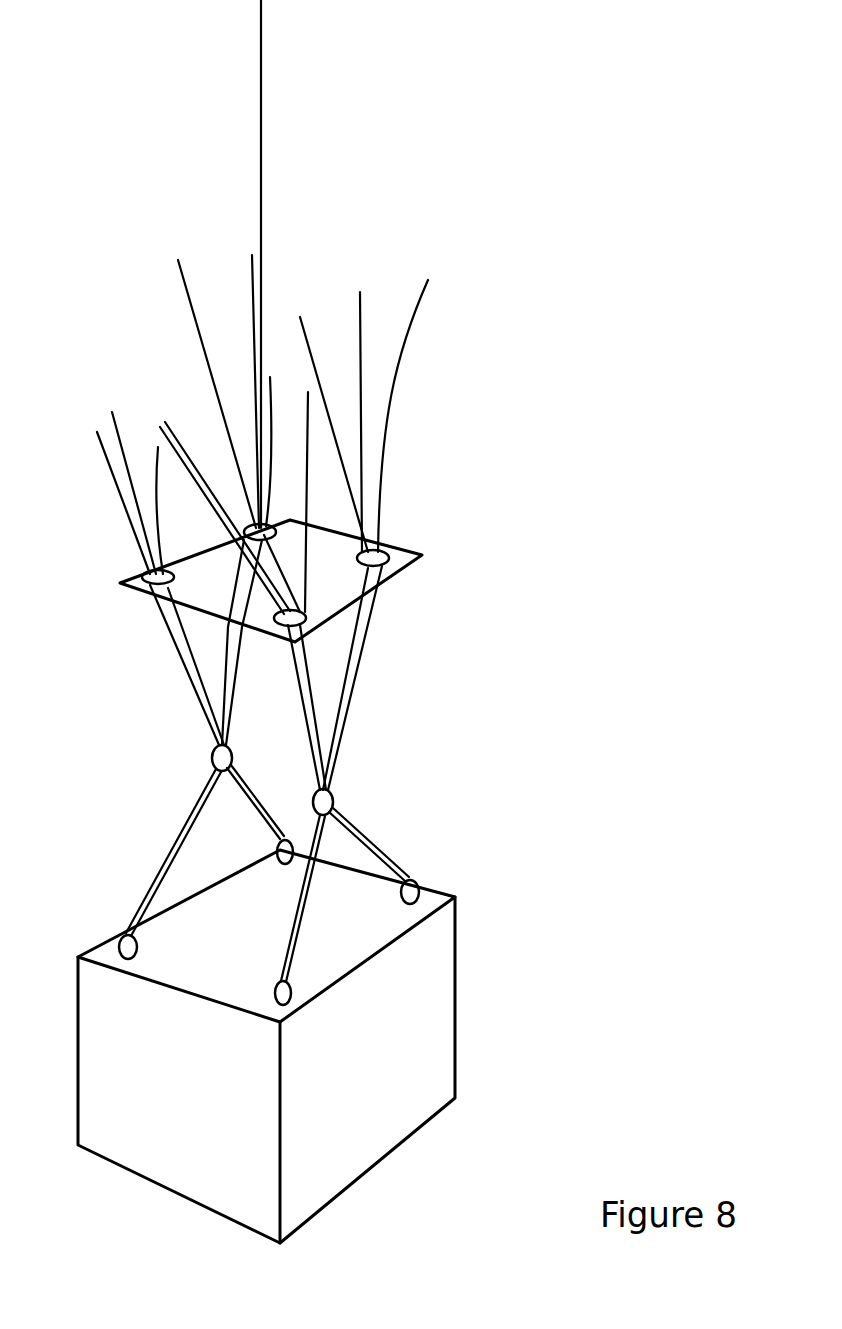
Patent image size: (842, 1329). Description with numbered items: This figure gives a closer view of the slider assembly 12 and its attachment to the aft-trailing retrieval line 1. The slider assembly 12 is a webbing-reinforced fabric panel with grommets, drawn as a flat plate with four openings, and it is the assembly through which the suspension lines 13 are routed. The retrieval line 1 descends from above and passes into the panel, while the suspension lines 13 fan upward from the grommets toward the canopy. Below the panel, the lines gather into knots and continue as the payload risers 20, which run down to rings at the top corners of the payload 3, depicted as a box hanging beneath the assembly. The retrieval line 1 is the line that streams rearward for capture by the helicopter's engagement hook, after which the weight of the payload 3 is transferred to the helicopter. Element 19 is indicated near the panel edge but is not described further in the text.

The retrieval line 1 is at (261, 142).
The payload 3 is at (445, 1022).
The slider assembly 12 is at (205, 610).
The suspension lines 13 is at (400, 368).
The plate holes 19 is at (333, 610).
The payload risers 20 is at (348, 710).